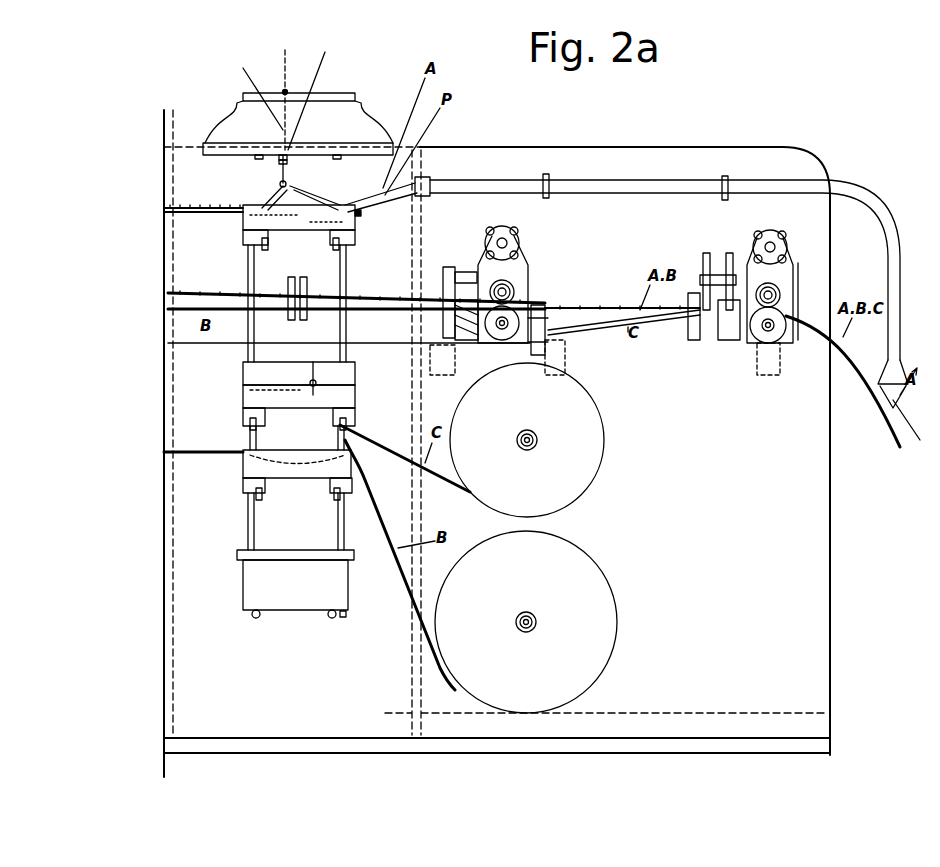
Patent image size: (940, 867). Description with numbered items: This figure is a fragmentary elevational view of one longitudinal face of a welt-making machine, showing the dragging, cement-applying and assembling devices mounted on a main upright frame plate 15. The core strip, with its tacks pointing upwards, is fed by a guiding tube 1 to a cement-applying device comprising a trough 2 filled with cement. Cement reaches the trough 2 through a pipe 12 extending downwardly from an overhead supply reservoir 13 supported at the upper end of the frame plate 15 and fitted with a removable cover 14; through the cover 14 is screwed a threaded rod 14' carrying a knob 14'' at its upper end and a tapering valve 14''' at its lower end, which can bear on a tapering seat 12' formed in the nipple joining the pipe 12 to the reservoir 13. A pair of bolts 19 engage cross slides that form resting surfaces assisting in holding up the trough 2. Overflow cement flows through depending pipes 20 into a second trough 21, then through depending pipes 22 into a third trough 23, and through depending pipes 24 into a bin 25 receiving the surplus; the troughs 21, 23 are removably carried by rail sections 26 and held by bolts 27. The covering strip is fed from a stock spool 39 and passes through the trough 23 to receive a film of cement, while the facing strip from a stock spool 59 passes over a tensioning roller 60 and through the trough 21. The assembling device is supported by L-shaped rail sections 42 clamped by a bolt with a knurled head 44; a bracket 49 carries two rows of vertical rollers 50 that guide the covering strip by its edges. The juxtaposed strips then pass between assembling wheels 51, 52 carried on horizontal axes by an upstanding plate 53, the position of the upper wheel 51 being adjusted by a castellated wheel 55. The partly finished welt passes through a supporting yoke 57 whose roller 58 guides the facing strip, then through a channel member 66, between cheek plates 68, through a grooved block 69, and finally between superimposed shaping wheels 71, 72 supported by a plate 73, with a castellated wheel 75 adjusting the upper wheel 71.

The guiding tube 1 is at (507, 187).
The trough 2 is at (340, 218).
The pipe 12 is at (257, 171).
The tapering seat 12' is at (308, 170).
The supply reservoir 13 is at (243, 122).
The removable cover 14 is at (299, 78).
The threaded rod 14' is at (255, 91).
The knob 14'' is at (291, 91).
The tapering valve 14''' is at (320, 91).
The upright frame plate 15 is at (657, 165).
The bolts 19 is at (268, 243).
The depending pipes 20 is at (248, 280).
The trough 21 is at (340, 371).
The depending pipes 22 is at (245, 432).
The trough 23 is at (270, 458).
The depending pipes 24 is at (248, 528).
The bin 25 is at (270, 590).
The rail sections 26 is at (323, 497).
The bolts 27 is at (245, 407).
The stock spool 39 is at (595, 598).
The guiding L-shaped rail sections 42 is at (445, 265).
The knurled head 44 is at (460, 270).
The bracket 49 is at (470, 322).
The vertical rollers 50 is at (453, 332).
The upper assembling wheel 51 is at (514, 290).
The lower assembling wheel 52 is at (540, 310).
The upstanding plate 53 is at (513, 275).
The castellated wheel 55 is at (515, 238).
The supporting yoke 57 is at (523, 340).
The roller 58 is at (555, 343).
The stock spool 59 is at (580, 412).
The tensioning roller 60 is at (350, 412).
The channel member 66 is at (705, 342).
The cheek plates 68 is at (712, 300).
The block 69 is at (740, 340).
The upper shaping wheel 71 is at (778, 295).
The lower shaping wheel 72 is at (775, 330).
The plate 73 is at (780, 278).
The castellated wheel 75 is at (778, 243).